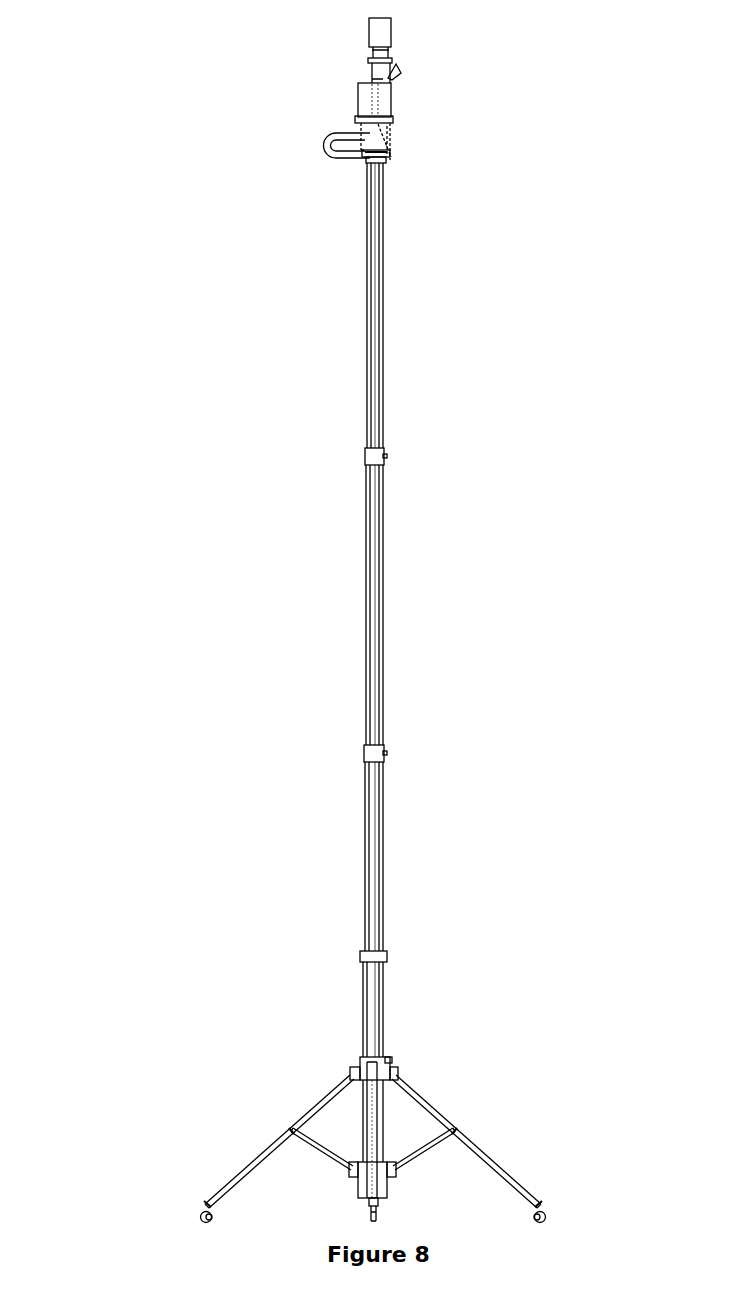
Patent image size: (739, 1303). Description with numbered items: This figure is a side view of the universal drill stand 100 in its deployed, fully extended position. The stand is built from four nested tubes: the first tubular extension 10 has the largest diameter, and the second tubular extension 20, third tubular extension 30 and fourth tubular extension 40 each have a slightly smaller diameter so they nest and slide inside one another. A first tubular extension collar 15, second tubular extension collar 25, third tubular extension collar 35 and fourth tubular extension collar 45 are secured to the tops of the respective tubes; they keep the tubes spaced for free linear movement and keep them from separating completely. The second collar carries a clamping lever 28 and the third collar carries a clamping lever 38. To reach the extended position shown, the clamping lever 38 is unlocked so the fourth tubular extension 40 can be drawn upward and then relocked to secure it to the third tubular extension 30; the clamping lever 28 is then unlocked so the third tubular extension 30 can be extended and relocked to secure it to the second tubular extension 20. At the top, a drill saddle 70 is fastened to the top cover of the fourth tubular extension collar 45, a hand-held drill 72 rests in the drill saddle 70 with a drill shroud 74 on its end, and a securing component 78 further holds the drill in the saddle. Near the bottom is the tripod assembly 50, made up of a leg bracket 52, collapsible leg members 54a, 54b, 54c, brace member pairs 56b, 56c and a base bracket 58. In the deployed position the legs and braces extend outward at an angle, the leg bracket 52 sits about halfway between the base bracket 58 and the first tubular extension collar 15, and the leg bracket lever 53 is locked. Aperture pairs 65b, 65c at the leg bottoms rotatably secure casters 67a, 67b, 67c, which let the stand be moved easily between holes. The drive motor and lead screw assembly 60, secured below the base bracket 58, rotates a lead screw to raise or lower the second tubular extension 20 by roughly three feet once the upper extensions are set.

The universal drill stand 100 is at (242, 52).
The drill shroud 74 is at (387, 30).
The hand-held drill 72 is at (383, 97).
The drill saddle 70 is at (390, 152).
The securing component 78 is at (356, 120).
The fourth tubular extension collar 45 is at (364, 160).
The fourth tubular extension 40 is at (367, 271).
The clamping lever 38 is at (390, 454).
The third tubular extension collar 35 is at (365, 452).
The third tubular extension 30 is at (366, 567).
The clamping lever 28 is at (390, 751).
The second tubular extension collar 25 is at (364, 752).
The second tubular extension 20 is at (365, 848).
The first tubular extension collar 15 is at (360, 955).
The first tubular extension 10 is at (364, 1010).
The tripod assembly 50 is at (428, 1087).
The leg bracket 52 is at (360, 1062).
The leg bracket lever 53 is at (393, 1060).
The collapsible leg member 54a is at (367, 1202).
The collapsible leg member 54b is at (217, 1190).
The collapsible leg member 54c is at (465, 1138).
The brace member pair 56b is at (327, 1140).
The brace member pair 56c is at (422, 1137).
The base bracket 58 is at (356, 1178).
The drive motor and lead screw assembly 60 is at (386, 1186).
The aperture pair 65b is at (203, 1205).
The aperture pair 65c is at (545, 1206).
The caster 67a is at (376, 1212).
The caster 67b is at (200, 1217).
The caster 67c is at (546, 1215).